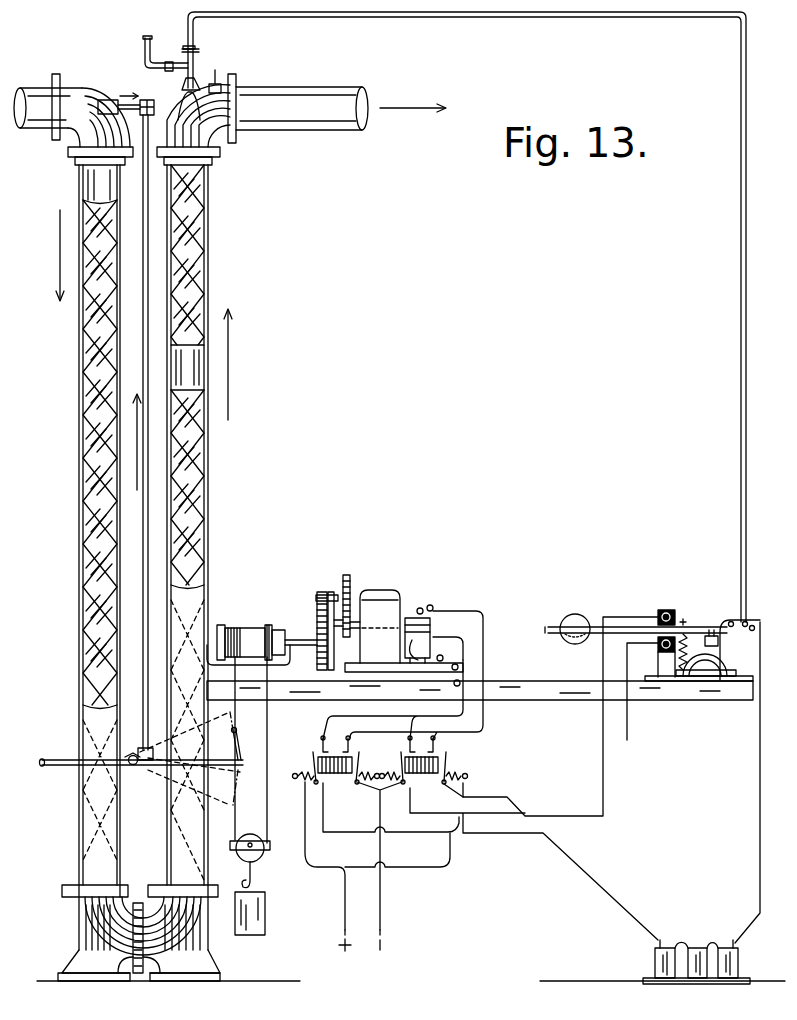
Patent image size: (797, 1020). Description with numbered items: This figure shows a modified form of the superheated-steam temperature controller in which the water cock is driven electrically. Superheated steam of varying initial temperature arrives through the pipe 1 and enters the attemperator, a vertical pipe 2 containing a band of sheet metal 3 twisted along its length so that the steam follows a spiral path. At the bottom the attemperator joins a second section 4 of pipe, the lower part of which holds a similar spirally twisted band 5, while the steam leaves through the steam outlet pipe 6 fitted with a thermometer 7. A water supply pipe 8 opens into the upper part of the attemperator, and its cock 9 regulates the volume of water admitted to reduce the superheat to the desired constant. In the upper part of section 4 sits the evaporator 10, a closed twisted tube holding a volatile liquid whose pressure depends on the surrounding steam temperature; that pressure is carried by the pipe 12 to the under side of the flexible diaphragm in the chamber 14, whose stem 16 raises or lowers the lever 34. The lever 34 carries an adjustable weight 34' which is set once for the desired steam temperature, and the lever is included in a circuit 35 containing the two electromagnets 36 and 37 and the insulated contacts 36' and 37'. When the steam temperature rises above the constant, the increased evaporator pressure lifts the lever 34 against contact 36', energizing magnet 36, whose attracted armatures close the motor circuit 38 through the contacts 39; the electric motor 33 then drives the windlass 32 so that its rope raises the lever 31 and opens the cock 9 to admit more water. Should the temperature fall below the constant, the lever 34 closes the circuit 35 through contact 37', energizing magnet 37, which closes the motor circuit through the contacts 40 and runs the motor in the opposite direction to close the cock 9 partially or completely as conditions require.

The pipe 1 is at (20, 94).
The pipe 2 is at (82, 410).
The band of sheet metal 3 is at (95, 535).
The second section 4 is at (206, 576).
The spirally twisted band 5 is at (198, 527).
The steam outlet pipe 6 is at (318, 90).
The thermometer 7 is at (214, 83).
The water supply pipe 8 is at (146, 260).
The cock 9 is at (134, 754).
The evaporator 10 is at (208, 232).
The pipe 12 is at (587, 15).
The chamber 14 is at (710, 664).
The stem 16 is at (711, 641).
The lever 31 is at (207, 762).
The windlass 32 is at (243, 628).
The electric motor 33 is at (370, 598).
The lever 34 is at (636, 607).
The adjustable weight 34' is at (561, 617).
The circuit 35 is at (570, 811).
The electromagnet 36 is at (424, 775).
The contact 36' is at (670, 601).
The electromagnet 37 is at (477, 723).
The contact 37' is at (699, 659).
The motor circuit 38 is at (343, 912).
The contacts 39 is at (421, 754).
The contacts 40 is at (335, 754).